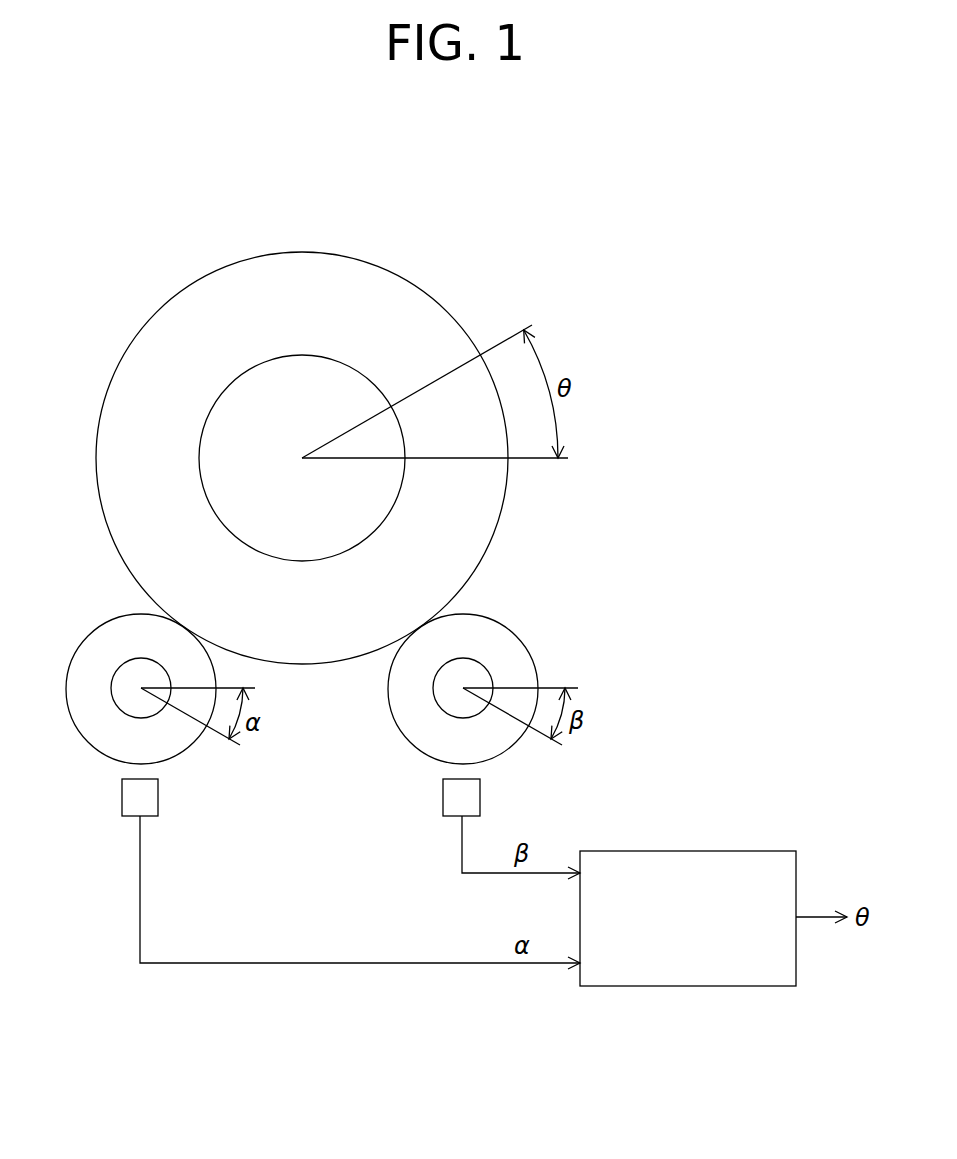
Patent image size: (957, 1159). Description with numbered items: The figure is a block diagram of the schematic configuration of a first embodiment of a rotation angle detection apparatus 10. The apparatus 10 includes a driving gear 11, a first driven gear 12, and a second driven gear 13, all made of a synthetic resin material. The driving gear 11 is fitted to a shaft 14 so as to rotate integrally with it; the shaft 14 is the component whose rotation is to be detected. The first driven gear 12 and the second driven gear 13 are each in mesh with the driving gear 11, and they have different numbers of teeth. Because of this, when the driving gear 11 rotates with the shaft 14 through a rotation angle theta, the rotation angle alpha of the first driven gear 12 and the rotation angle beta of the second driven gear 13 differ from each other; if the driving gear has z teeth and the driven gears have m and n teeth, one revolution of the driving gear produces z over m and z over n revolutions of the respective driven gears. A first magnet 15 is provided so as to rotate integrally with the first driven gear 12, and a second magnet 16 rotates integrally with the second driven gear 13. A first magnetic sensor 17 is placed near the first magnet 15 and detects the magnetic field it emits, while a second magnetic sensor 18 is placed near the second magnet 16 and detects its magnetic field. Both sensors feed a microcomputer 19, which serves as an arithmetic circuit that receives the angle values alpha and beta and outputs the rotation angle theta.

The rotation angle detection apparatus 10 is at (123, 290).
The driving gear 11 is at (302, 254).
The first driven gear 12 is at (107, 632).
The second driven gear 13 is at (507, 640).
The shaft 14 is at (302, 357).
The first magnet 15 is at (123, 700).
The second magnet 16 is at (443, 700).
The first magnetic sensor 17 is at (122, 797).
The second magnetic sensor 18 is at (443, 797).
The microcomputer 19 is at (685, 851).